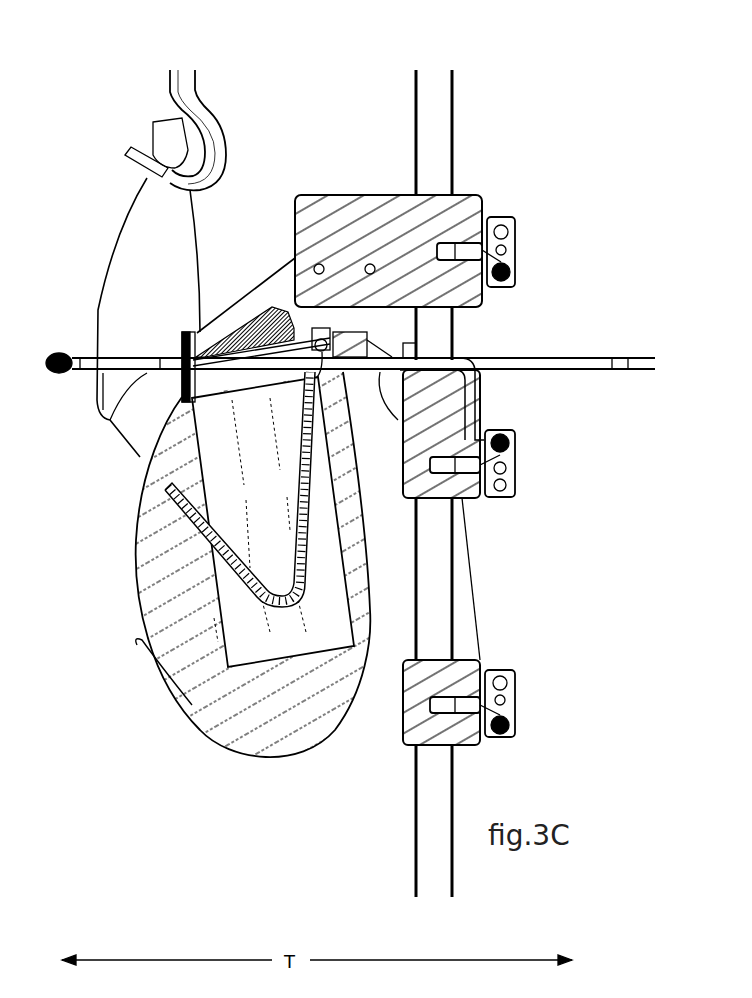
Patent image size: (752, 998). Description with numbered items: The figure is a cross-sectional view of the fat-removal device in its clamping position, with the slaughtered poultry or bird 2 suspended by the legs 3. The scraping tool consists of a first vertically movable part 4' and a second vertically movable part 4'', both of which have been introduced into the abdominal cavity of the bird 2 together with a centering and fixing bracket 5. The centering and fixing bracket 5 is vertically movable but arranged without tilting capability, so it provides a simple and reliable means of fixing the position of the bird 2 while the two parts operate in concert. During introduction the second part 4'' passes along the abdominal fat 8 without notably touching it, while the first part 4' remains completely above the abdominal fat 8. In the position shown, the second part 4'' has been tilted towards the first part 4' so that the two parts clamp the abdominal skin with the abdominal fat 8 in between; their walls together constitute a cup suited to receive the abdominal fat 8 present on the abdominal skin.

The slaughtered poultry or bird 2 is at (159, 556).
The legs 3 is at (114, 255).
The first vertically movable part 4' is at (261, 295).
The second vertically movable part 4'' is at (273, 509).
The centering and fixing bracket 5 is at (319, 491).
The abdominal fat 8 is at (268, 302).